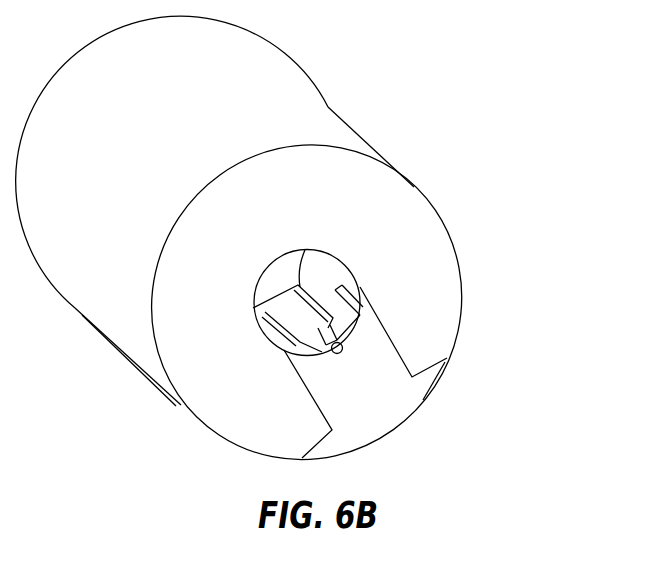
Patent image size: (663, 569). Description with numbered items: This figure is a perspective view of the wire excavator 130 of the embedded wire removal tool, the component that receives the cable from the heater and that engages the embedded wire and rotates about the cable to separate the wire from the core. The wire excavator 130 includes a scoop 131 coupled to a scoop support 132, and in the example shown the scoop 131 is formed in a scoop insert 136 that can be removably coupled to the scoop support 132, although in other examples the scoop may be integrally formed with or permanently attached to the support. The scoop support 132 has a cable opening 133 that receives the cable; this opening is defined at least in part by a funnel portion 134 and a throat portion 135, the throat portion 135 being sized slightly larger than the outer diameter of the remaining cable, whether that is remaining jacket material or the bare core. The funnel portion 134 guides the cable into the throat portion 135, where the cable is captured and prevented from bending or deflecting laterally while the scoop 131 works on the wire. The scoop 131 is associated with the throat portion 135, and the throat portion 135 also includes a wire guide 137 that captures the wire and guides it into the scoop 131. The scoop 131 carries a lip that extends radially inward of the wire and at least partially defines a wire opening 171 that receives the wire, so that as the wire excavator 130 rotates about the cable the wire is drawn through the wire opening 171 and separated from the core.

The wire excavator 130 is at (401, 52).
The scoop 131 is at (327, 332).
The scoop support 132 is at (446, 253).
The cable opening 133 is at (326, 269).
The funnel portion 134 is at (292, 275).
The throat portion 135 is at (338, 278).
The scoop insert 136 is at (397, 446).
The wire guide 137 is at (295, 310).
The wire opening 171 is at (343, 357).